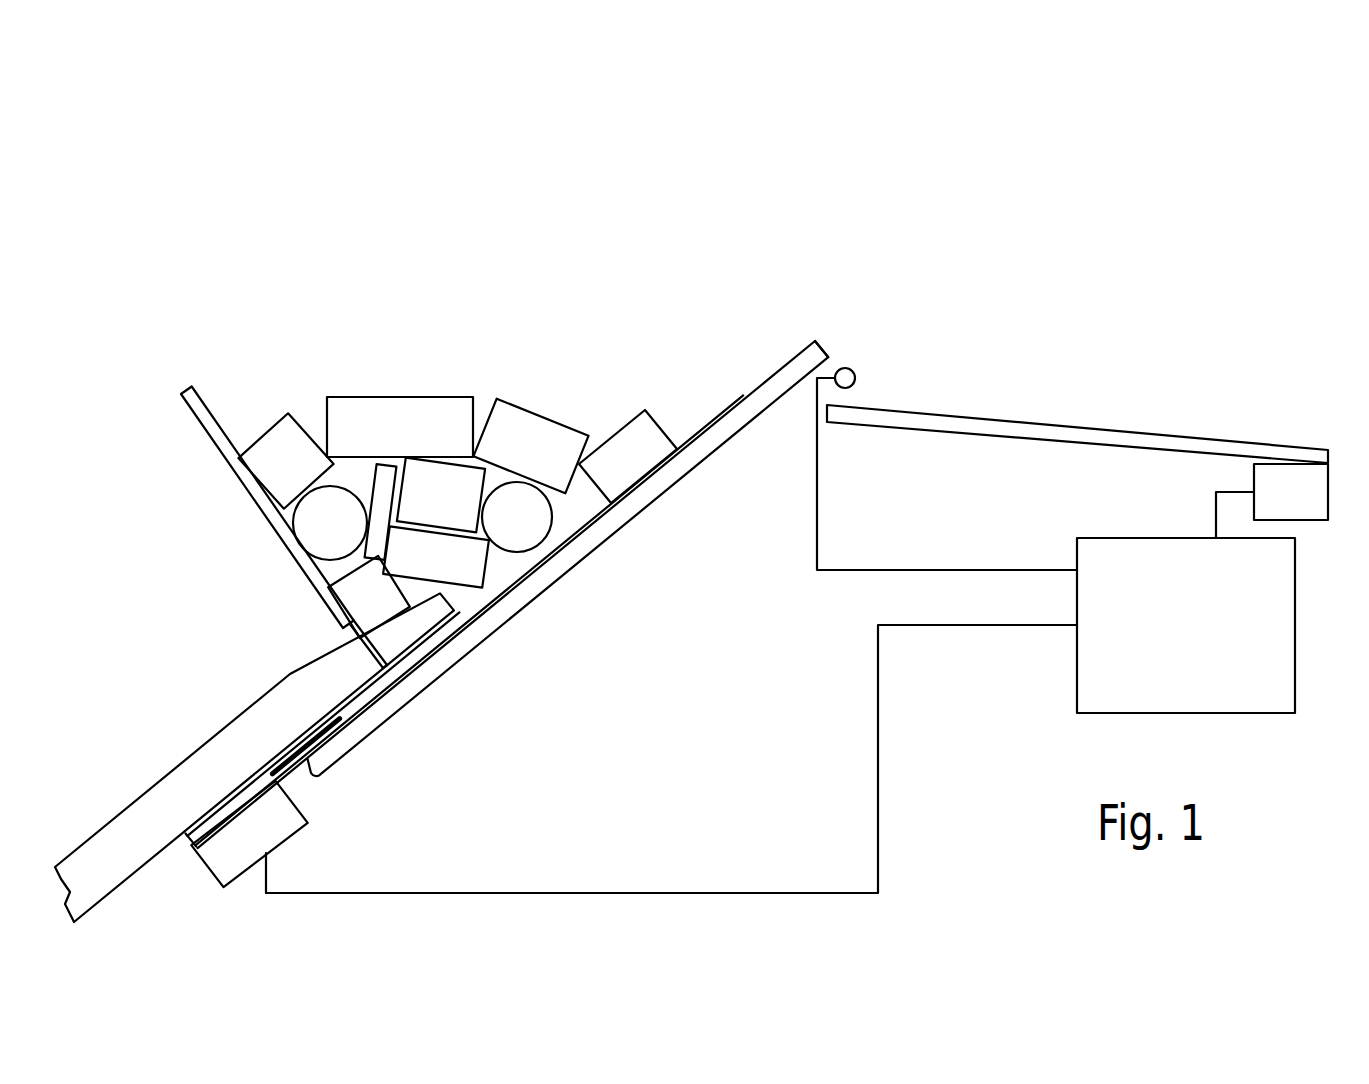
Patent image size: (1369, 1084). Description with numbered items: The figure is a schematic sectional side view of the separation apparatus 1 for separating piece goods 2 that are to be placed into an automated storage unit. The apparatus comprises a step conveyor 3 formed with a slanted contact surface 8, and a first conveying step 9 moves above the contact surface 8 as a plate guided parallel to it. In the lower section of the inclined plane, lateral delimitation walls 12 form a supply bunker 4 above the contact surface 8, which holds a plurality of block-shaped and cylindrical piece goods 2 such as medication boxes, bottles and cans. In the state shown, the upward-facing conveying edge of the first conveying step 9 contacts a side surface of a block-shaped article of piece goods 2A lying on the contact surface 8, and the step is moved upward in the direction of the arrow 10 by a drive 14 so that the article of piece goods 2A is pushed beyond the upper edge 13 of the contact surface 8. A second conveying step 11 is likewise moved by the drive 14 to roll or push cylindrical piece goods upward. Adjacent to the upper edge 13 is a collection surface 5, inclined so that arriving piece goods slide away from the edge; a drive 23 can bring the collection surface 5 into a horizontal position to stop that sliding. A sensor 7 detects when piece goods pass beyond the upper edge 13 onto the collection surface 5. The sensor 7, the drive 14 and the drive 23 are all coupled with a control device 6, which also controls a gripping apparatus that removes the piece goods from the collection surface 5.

The separation apparatus 1 is at (1104, 124).
The piece goods 2 is at (480, 440).
The block-shaped article of piece goods 2A is at (645, 412).
The step conveyor 3 is at (725, 724).
The supply bunker 4 is at (339, 226).
The collection surface 5 is at (1165, 432).
The control device 6 is at (1077, 668).
The sensor 7 is at (853, 372).
The contact surface 8 is at (773, 378).
The first conveying step 9 is at (504, 585).
The arrow 10 is at (304, 764).
The second conveying step 11 is at (355, 665).
The lateral delimitation walls 12 is at (237, 482).
The upper edge 13 is at (824, 330).
The drive 14 is at (305, 826).
The drive 23 is at (1252, 473).